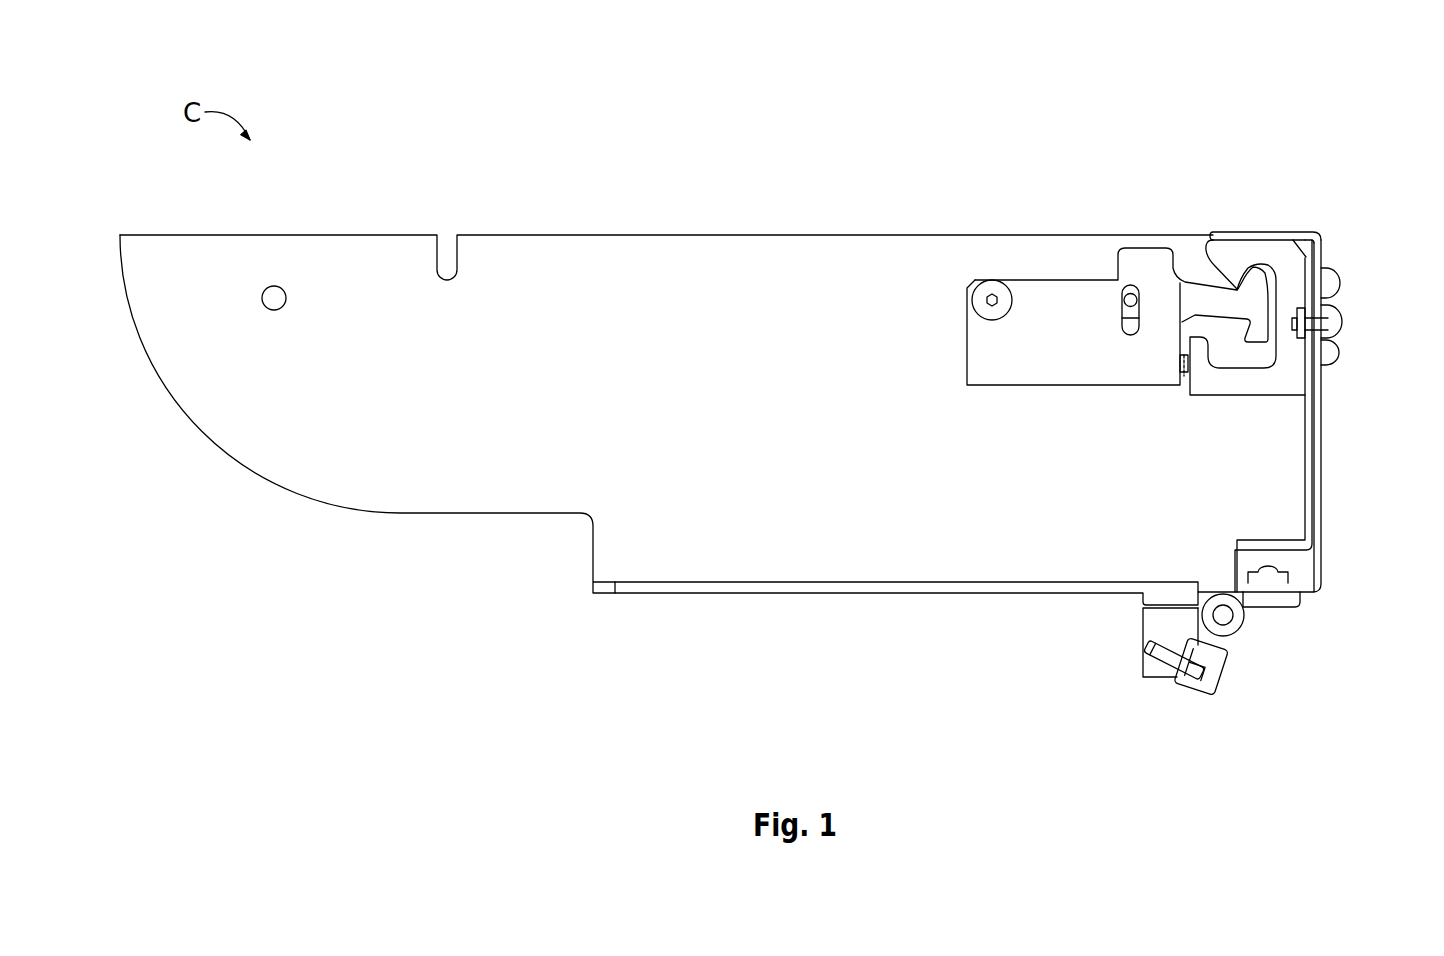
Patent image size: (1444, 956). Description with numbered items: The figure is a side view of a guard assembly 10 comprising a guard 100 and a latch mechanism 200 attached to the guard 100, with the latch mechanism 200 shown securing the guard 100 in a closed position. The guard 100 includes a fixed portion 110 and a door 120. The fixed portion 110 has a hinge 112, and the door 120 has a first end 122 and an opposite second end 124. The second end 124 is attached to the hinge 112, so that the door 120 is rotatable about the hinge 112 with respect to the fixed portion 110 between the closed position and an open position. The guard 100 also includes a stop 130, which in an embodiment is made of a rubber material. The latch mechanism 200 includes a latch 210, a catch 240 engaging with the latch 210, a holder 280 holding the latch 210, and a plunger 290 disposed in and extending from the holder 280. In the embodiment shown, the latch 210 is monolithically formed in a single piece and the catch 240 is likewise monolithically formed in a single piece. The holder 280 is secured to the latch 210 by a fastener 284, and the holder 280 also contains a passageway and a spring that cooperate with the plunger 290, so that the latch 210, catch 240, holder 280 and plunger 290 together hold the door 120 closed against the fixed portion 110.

The guard assembly 10 is at (178, 218).
The guard 100 is at (1257, 692).
The fixed portion 110 is at (970, 553).
The hinge 112 is at (1228, 617).
The door 120 is at (1325, 406).
The first end 122 is at (1318, 247).
The second end 124 is at (1277, 602).
The stop 130 is at (1193, 680).
The latch mechanism 200 is at (1340, 90).
The latch 210 is at (1141, 243).
The catch 240 is at (1302, 238).
The holder 280 is at (960, 283).
The fastener 284 is at (993, 297).
The plunger 290 is at (1185, 376).